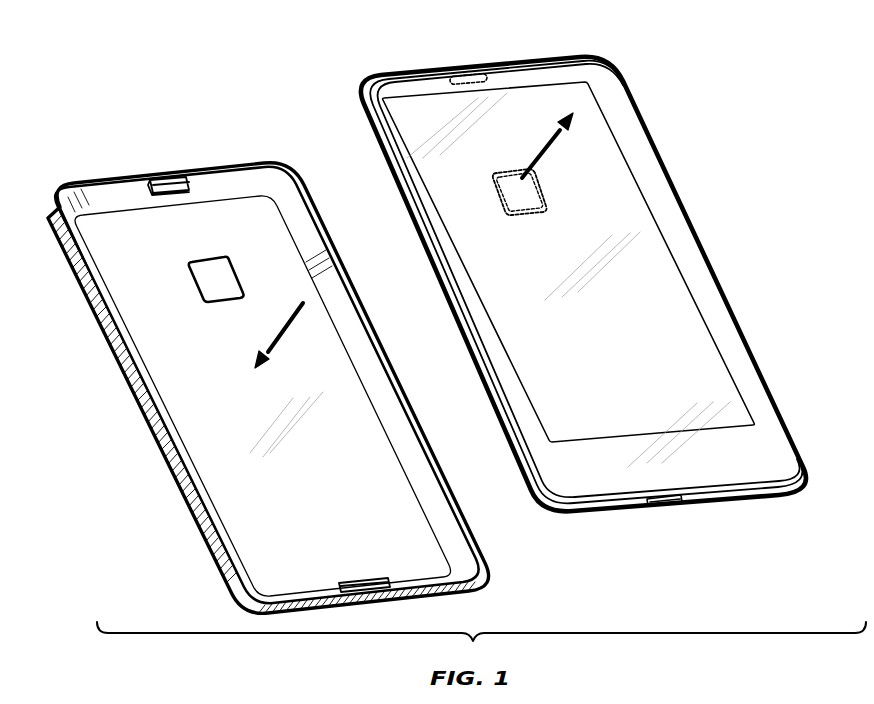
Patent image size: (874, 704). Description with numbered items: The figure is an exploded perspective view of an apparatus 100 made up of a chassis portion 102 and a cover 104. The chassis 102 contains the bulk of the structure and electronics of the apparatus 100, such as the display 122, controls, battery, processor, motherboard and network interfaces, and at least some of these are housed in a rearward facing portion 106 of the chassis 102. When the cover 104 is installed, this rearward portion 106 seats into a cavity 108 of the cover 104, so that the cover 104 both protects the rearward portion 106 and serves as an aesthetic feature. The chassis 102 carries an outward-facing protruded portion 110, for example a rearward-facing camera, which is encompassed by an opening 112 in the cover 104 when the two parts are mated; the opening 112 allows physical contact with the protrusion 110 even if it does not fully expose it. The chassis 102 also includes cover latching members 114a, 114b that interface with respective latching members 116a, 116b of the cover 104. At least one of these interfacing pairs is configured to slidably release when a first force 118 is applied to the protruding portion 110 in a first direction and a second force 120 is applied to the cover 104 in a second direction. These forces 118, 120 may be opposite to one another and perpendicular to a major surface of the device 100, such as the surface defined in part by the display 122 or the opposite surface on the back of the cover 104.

The apparatus 100 is at (729, 95).
The chassis portion 102 is at (687, 228).
The cover 104 is at (200, 169).
The rearward facing portion 106 is at (558, 512).
The cavity 108 is at (347, 447).
The protruded portion 110 is at (527, 194).
The opening 112 is at (214, 282).
The cover latching member 114a is at (468, 82).
The cover latching member 114b is at (672, 504).
The latching member 116a is at (168, 189).
The latching member 116b is at (363, 588).
The first force 118 is at (545, 143).
The second force 120 is at (297, 321).
The display 122 is at (687, 358).